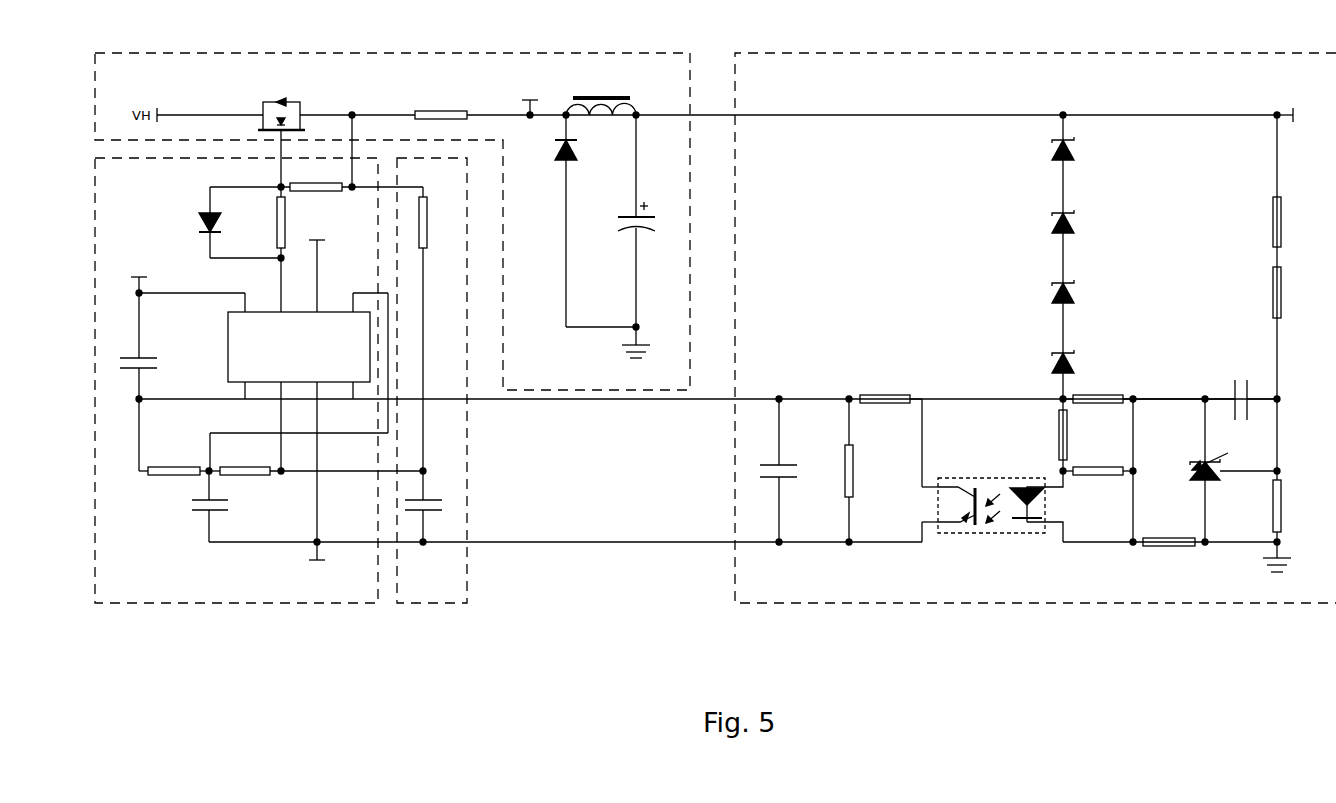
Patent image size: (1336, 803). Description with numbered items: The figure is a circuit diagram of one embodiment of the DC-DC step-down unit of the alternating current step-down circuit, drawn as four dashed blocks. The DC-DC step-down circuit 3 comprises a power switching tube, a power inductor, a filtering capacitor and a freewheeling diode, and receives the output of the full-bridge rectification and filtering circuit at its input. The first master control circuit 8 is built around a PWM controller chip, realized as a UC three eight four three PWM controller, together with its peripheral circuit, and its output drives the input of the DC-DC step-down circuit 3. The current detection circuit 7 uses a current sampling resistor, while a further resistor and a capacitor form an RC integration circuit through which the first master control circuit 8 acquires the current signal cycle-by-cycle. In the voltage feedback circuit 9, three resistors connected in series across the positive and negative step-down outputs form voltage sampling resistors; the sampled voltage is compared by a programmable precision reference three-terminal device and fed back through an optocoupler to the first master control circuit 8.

The DC-DC step-down circuit 3 is at (392, 221).
The current detection circuit 7 is at (432, 384).
The first master control circuit 8 is at (259, 380).
The voltage feedback circuit 9 is at (1035, 328).